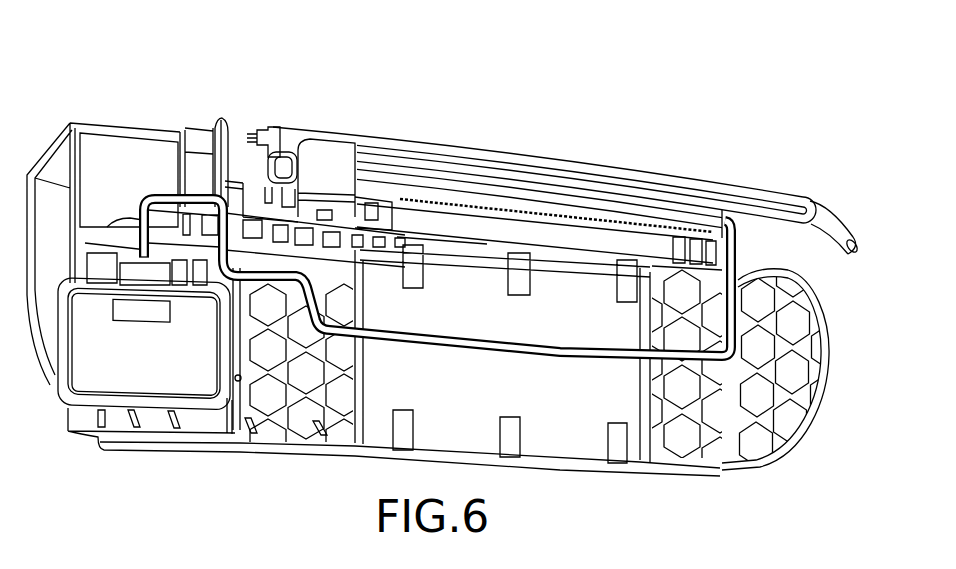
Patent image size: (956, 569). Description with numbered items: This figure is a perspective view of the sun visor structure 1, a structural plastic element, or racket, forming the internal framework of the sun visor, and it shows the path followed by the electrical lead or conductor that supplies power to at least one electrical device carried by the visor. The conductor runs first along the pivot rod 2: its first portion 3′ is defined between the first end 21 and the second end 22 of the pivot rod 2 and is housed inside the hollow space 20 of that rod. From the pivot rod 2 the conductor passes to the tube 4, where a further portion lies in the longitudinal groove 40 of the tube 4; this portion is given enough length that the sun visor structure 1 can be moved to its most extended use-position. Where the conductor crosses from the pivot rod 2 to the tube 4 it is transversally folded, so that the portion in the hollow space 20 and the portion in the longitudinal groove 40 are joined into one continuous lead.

The sun visor structure 1 is at (738, 456).
The pivot rod 2 is at (553, 158).
The first portion 3′ is at (793, 213).
The tube 4 is at (478, 208).
The hollow space 20 is at (641, 182).
The first end 21 is at (817, 208).
The second end 22 is at (272, 127).
The longitudinal groove 40 is at (660, 220).